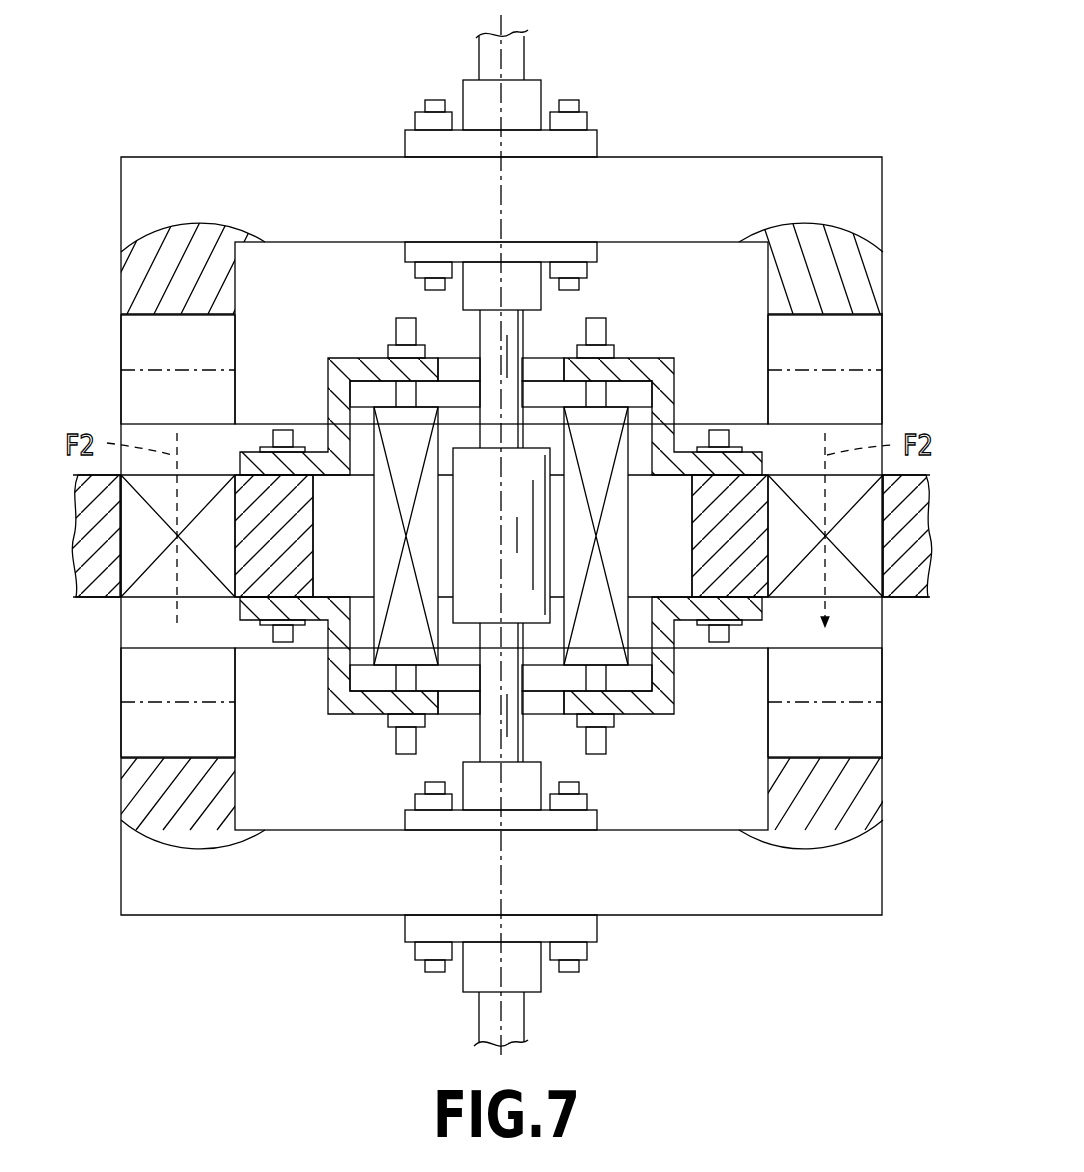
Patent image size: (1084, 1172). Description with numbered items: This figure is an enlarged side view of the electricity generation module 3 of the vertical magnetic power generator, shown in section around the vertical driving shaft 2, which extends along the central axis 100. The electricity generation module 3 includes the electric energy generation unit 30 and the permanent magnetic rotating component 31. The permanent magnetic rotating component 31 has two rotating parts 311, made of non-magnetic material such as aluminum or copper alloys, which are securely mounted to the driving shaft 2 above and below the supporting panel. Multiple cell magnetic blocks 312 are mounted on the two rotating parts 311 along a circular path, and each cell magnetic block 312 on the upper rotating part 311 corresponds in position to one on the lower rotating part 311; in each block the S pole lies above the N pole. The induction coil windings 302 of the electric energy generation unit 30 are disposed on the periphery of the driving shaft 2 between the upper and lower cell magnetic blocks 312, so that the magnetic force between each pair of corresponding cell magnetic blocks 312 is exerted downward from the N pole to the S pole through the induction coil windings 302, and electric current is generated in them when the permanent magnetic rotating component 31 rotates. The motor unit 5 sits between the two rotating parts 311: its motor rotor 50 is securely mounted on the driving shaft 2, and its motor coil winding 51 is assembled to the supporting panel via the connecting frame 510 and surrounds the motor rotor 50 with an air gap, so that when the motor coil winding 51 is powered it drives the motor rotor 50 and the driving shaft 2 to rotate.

The central axis 100 is at (502, 63).
The driving shaft 2 is at (523, 342).
The electricity generation module 3 is at (770, 130).
The motor unit 5 is at (648, 337).
The electric energy generation unit 30 is at (115, 610).
The permanent magnetic rotating component 31 is at (338, 123).
The induction coil windings 302 is at (152, 598).
The rotating parts 311 is at (197, 177).
The cell magnetic blocks 312 is at (120, 388).
The motor rotor 50 is at (533, 625).
The motor coil winding 51 is at (633, 420).
The connecting frame 510 is at (373, 358).